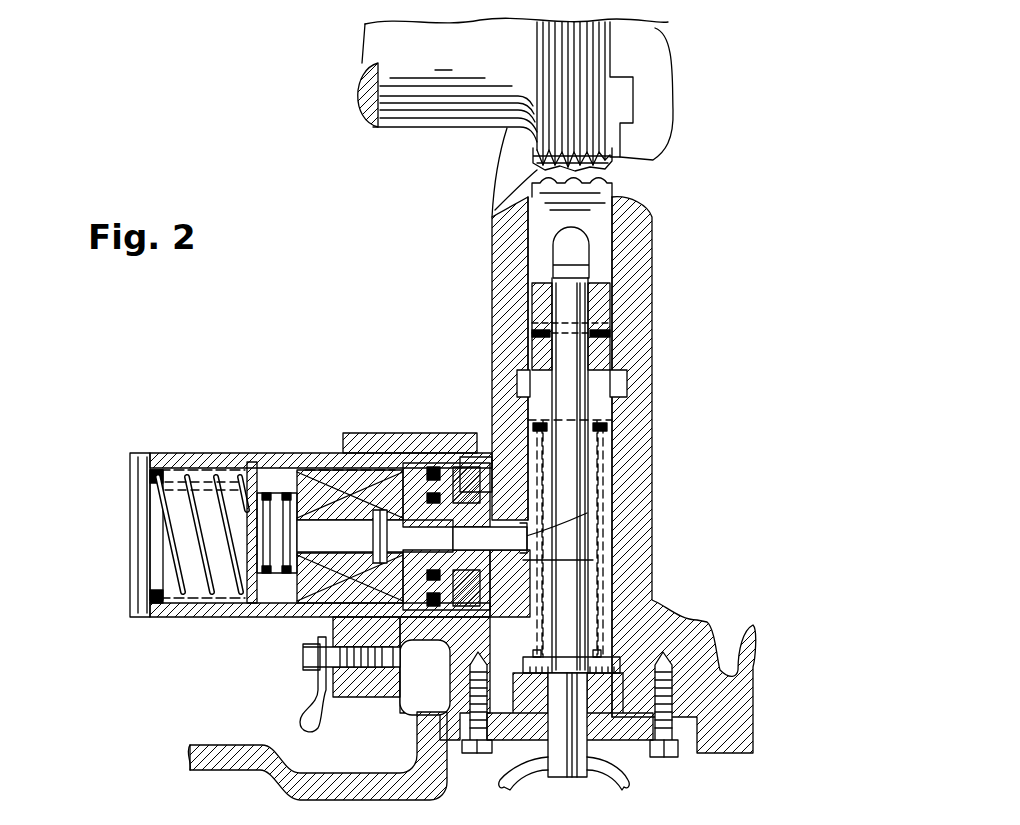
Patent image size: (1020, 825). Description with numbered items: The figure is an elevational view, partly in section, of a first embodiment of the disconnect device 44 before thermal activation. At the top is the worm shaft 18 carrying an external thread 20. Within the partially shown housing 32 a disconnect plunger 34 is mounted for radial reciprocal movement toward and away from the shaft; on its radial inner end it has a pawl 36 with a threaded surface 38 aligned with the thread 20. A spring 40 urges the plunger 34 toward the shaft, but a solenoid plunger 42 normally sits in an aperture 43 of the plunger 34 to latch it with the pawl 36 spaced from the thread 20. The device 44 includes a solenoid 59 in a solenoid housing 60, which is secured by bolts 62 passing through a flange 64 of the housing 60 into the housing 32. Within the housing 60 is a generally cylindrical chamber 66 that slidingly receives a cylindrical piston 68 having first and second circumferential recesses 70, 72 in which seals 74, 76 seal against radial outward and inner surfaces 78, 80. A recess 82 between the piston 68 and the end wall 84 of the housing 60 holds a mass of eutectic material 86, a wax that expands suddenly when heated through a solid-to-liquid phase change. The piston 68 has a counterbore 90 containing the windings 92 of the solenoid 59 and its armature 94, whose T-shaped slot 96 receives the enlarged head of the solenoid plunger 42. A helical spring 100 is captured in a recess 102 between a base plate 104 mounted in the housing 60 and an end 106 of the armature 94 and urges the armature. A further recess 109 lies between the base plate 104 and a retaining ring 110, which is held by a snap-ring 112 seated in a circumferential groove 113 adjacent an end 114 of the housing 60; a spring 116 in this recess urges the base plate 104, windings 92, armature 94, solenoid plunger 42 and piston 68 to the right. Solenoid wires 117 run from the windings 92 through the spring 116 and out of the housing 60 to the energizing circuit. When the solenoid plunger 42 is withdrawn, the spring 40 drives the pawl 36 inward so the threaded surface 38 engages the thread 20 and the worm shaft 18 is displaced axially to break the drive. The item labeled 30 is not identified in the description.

The worm shaft 18 is at (440, 134).
The thread 20 is at (606, 172).
The fork spring 30 is at (620, 819).
The housing 32 is at (303, 795).
The disconnect plunger 34 is at (580, 370).
The pawl 36 is at (600, 247).
The threaded surface 38 is at (606, 184).
The spring 40 is at (603, 430).
The solenoid plunger 42 is at (593, 560).
The aperture 43 is at (587, 513).
The disconnect device 44 is at (200, 617).
The solenoid 59 is at (327, 432).
The solenoid housing 60 is at (230, 450).
The bolts 62 is at (313, 677).
The flange 64 is at (337, 693).
The chamber 66 is at (200, 467).
The piston 68 is at (333, 625).
The first circumferential recess 70 is at (438, 470).
The second circumferential recess 72 is at (408, 458).
The seal 74 is at (438, 640).
The seal 76 is at (500, 540).
The radial outward surface 78 is at (442, 690).
The radial inner surface 80 is at (477, 587).
The recess 82 is at (446, 470).
The end wall 84 is at (477, 477).
The eutectic material 86 is at (497, 460).
The counterbore 90 is at (287, 610).
The windings 92 is at (290, 610).
The armature 94 is at (267, 605).
The T-shaped slot 96 is at (378, 562).
The helical spring 100 is at (368, 537).
The recess 102 is at (257, 470).
The base plate 104 is at (247, 518).
The end 106 is at (300, 465).
The recess 109 is at (183, 617).
The retaining ring 110 is at (150, 467).
The snap-ring 112 is at (140, 470).
The circumferential groove 113 is at (140, 603).
The end 114 is at (131, 456).
The spring 116 is at (173, 467).
The solenoid wires 117 is at (245, 487).